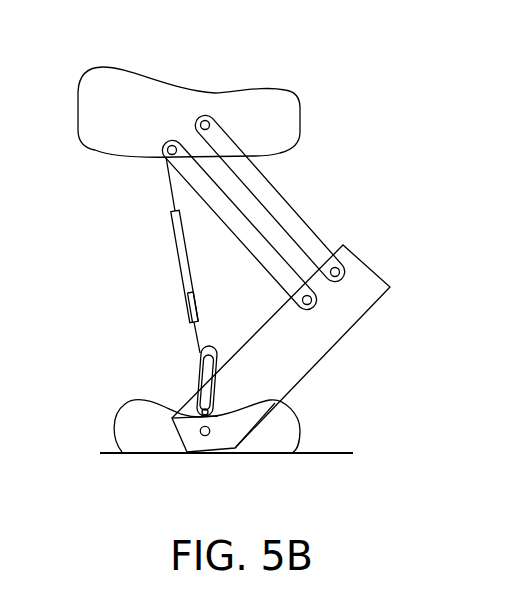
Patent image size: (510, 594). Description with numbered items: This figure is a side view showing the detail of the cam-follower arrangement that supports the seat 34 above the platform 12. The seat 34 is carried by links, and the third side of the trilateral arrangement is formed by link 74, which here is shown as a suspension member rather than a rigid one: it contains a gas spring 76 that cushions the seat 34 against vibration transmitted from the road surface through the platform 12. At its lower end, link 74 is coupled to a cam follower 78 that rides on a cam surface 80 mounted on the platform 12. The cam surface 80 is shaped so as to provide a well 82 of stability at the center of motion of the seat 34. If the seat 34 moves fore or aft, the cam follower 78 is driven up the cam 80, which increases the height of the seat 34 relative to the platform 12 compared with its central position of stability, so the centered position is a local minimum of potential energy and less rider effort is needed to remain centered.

The platform 12 is at (322, 455).
The seat 34 is at (284, 122).
The link 74 is at (167, 191).
The gas spring 76 is at (175, 270).
The cam follower 78 is at (198, 372).
The cam surface 80 is at (298, 423).
The well 82 is at (210, 417).